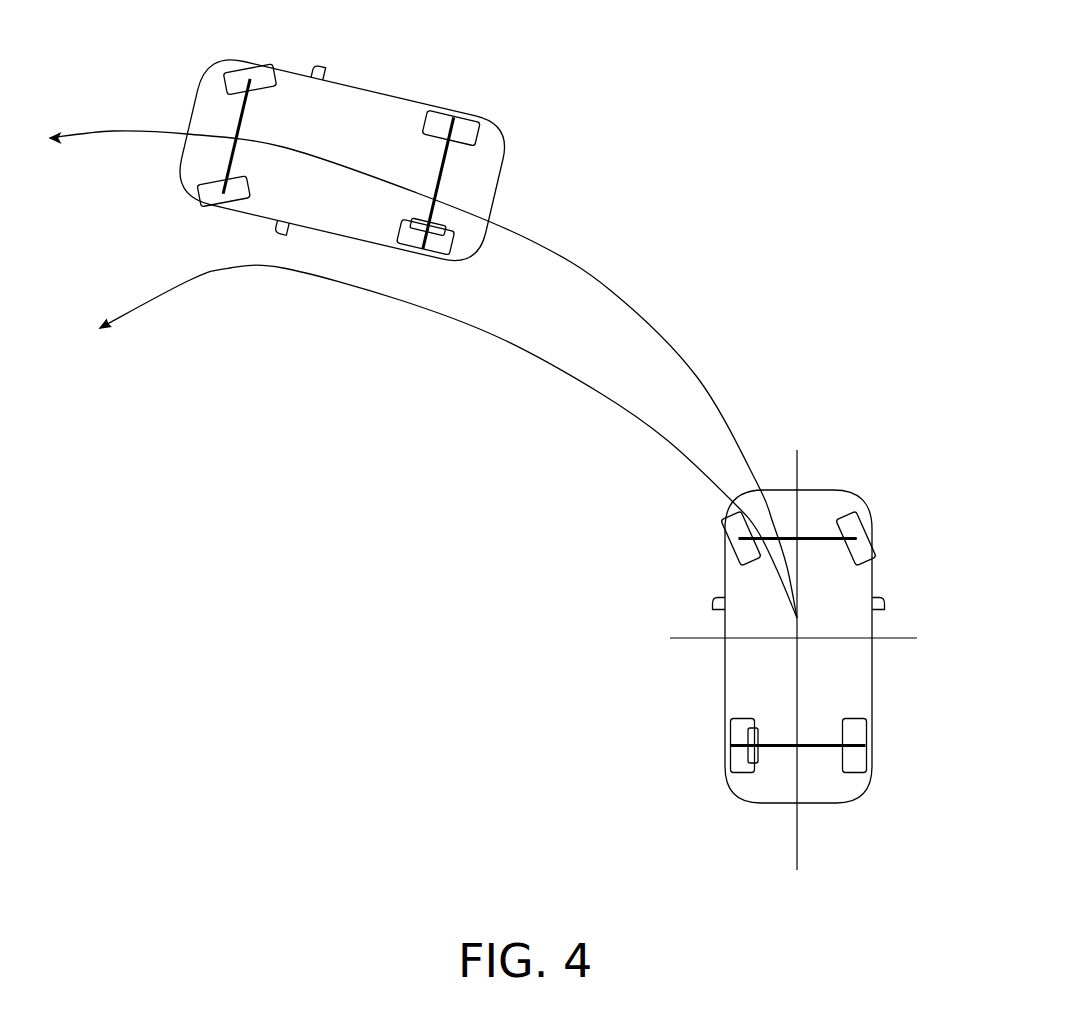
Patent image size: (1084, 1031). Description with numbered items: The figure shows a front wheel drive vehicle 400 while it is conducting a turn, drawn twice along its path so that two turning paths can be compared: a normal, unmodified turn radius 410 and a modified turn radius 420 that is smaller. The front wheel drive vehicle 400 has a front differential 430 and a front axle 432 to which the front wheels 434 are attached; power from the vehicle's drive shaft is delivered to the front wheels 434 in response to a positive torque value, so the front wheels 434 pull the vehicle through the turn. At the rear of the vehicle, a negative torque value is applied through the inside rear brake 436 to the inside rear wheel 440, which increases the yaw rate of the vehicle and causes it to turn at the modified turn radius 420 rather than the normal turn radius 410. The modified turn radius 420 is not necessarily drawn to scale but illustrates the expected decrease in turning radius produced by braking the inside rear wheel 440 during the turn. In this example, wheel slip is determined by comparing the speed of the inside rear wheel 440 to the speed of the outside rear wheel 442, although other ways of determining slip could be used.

The front wheel drive vehicle 400 is at (883, 570).
The normal turn radius 410 is at (423, 374).
The modified turn radius 420 is at (448, 441).
The front differential 430 is at (518, 305).
The front axle 432 is at (882, 591).
The front wheels 434 is at (532, 295).
The inside rear brake 436 is at (584, 537).
The inside rear wheel 440 is at (576, 495).
The outside rear wheel 442 is at (684, 458).